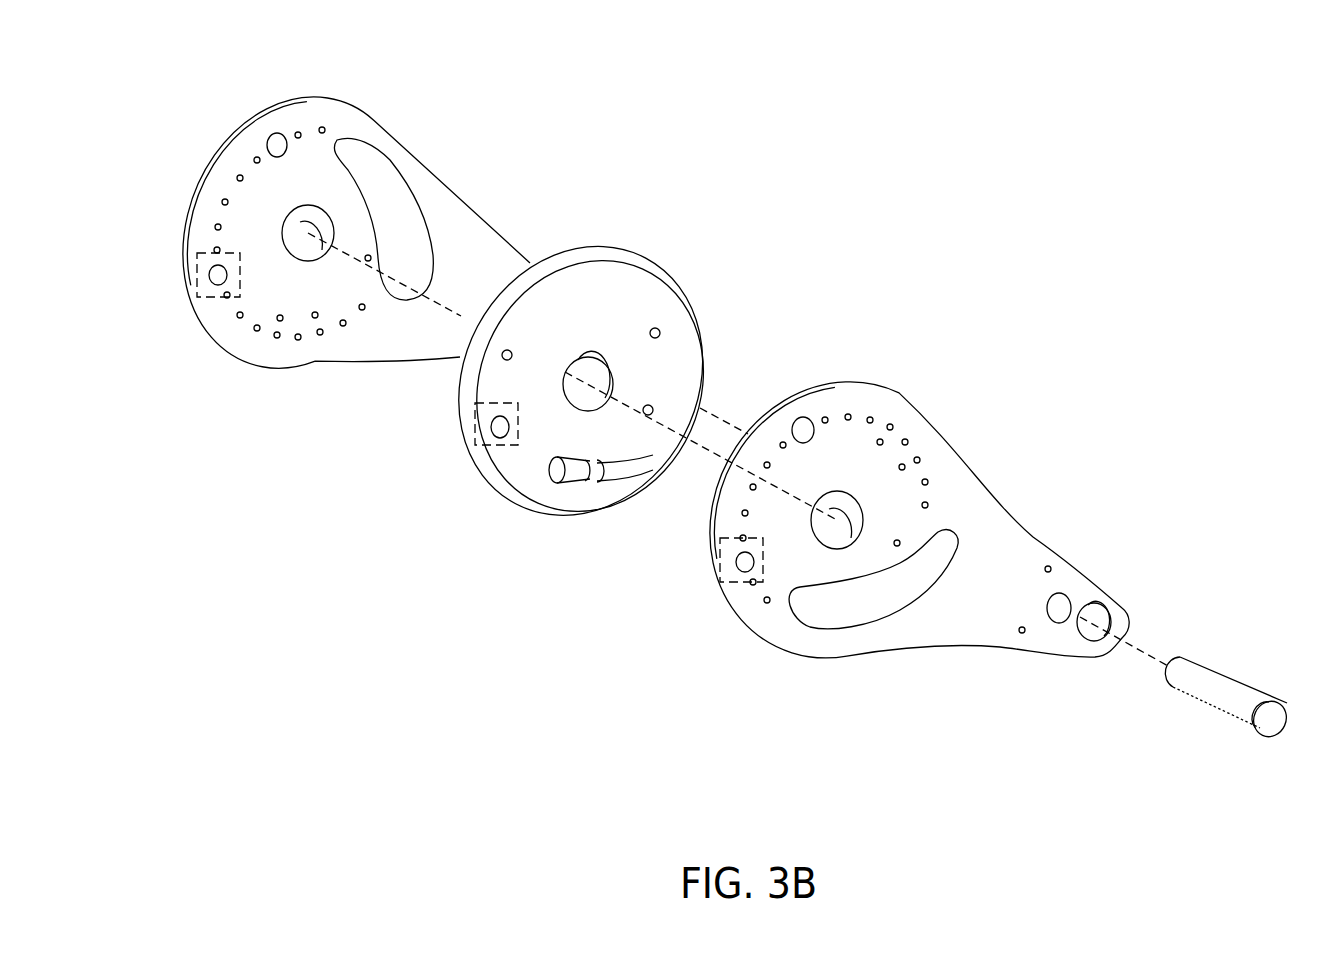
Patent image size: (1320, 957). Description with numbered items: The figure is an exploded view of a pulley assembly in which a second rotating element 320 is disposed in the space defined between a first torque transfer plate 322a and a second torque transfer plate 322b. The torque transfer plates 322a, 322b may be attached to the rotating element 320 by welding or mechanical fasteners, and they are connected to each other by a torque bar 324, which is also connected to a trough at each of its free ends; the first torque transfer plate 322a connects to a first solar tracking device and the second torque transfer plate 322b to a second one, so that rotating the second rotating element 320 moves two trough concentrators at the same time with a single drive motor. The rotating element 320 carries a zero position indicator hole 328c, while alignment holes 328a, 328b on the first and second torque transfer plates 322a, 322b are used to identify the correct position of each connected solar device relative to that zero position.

The second rotating element 320 is at (593, 331).
The first torque transfer plate 322a is at (785, 650).
The second torque transfer plate 322b is at (310, 97).
The torque bar 324 is at (1222, 668).
The alignment hole 328a is at (713, 547).
The alignment hole 328b is at (210, 252).
The zero position indicator hole 328c is at (513, 447).